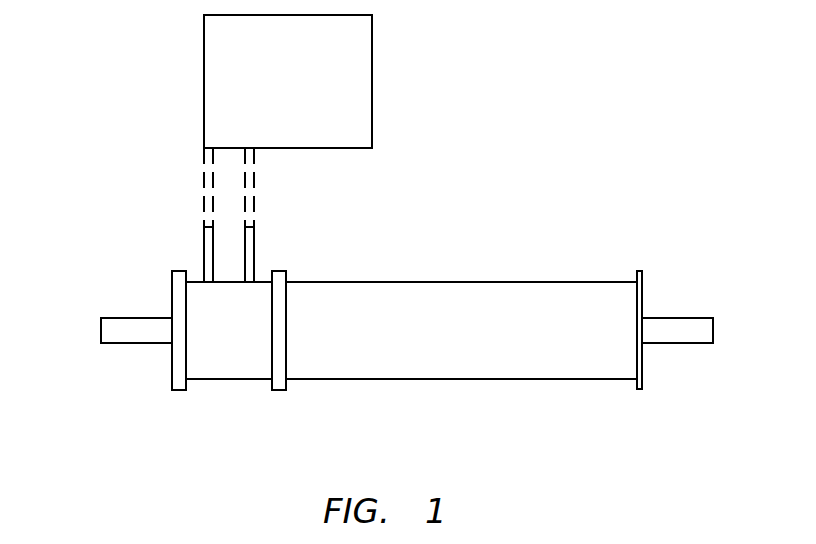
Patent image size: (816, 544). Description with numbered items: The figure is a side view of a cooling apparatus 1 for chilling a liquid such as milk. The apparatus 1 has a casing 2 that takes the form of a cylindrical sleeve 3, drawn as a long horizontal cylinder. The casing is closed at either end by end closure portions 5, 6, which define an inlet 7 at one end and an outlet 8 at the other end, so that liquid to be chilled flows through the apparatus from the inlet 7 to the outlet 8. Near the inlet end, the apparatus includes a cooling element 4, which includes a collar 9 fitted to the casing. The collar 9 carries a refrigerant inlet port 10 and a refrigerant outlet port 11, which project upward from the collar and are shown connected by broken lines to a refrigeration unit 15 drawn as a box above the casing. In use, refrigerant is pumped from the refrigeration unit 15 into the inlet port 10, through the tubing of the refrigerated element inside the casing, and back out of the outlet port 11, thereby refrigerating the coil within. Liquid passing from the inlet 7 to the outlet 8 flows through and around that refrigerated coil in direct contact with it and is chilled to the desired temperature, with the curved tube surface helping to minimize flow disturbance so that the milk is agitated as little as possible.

The apparatus 1 is at (567, 178).
The casing 2 is at (329, 379).
The cylindrical sleeve 3 is at (480, 379).
The cooling element 4 is at (237, 379).
The end closure portion 5 is at (176, 373).
The end closure portion 6 is at (642, 375).
The inlet 7 is at (99, 333).
The outlet 8 is at (713, 327).
The collar 9 is at (221, 363).
The refrigerant inlet port 10 is at (203, 245).
The refrigerant outlet port 11 is at (255, 237).
The refrigeration unit 15 is at (373, 87).